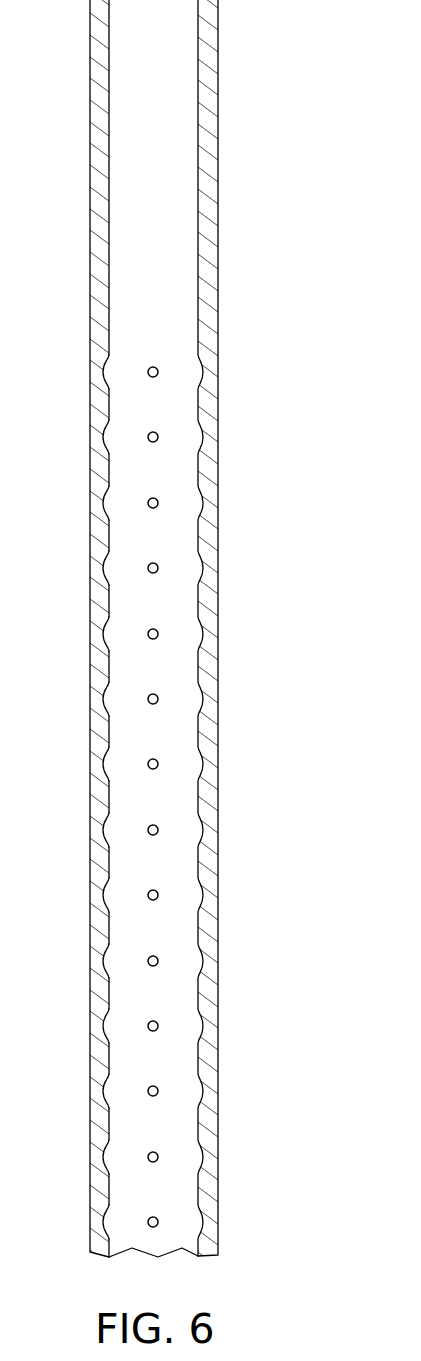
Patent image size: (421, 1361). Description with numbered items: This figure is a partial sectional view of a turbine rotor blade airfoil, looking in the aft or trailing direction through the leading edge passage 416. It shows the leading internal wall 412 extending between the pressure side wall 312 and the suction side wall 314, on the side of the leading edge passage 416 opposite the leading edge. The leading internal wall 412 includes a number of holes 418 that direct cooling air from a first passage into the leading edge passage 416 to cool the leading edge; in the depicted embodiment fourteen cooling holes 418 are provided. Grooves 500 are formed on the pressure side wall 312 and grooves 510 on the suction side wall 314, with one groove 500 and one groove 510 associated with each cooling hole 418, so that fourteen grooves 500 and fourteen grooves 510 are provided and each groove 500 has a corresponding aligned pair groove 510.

The leading internal wall 412 is at (125, 300).
The cooling holes 418 is at (147, 372).
The suction side wall 314 is at (103, 453).
The pressure side wall 312 is at (208, 457).
The groove 510 is at (104, 633).
The leading edge passage 416 is at (115, 733).
The groove 500 is at (207, 373).